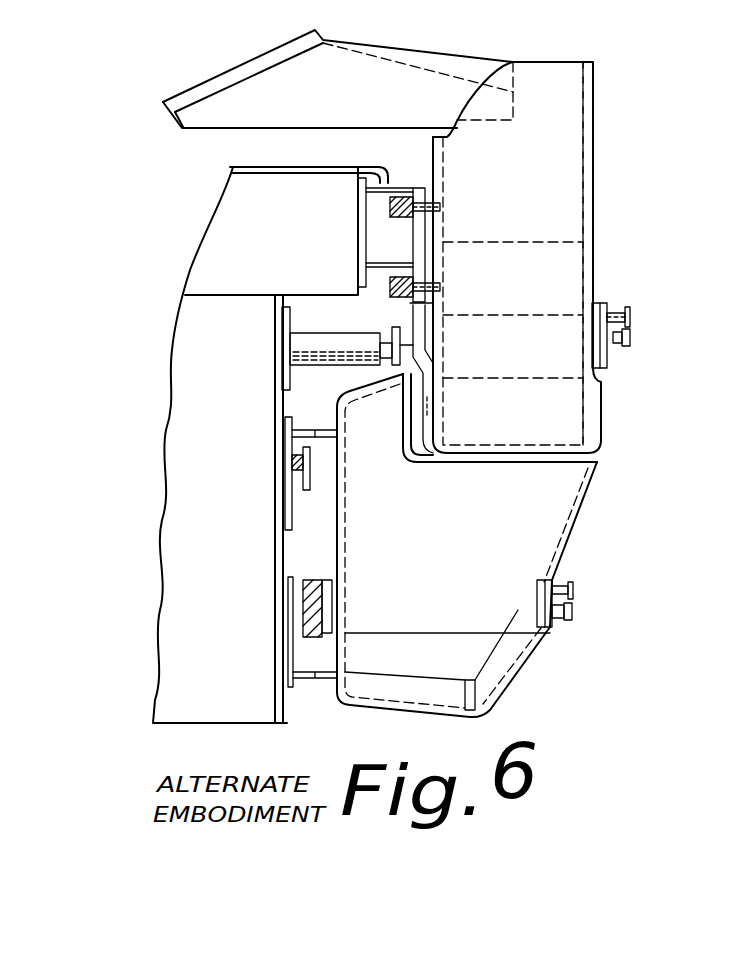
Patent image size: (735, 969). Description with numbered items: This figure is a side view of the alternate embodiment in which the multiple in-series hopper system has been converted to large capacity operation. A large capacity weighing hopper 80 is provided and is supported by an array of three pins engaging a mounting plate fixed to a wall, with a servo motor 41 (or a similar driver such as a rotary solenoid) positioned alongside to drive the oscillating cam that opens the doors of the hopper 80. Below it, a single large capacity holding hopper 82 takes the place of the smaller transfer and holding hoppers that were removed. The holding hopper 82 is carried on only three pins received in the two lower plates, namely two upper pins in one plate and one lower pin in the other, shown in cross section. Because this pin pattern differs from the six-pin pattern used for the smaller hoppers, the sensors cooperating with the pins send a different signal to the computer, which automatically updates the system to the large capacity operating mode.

The large capacity weighing hopper 80 is at (602, 217).
The large capacity holding hopper 82 is at (583, 557).
The servo motor 41 is at (405, 330).